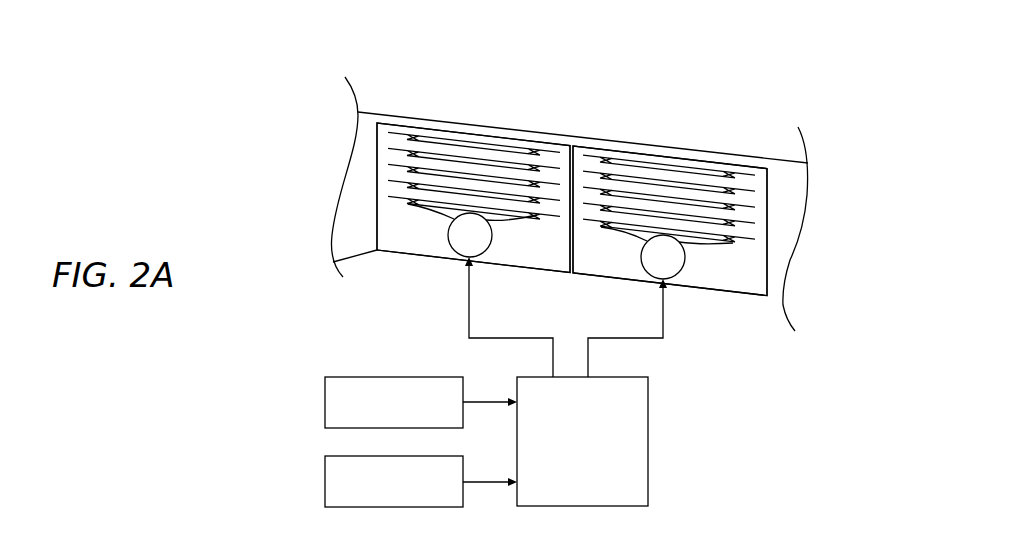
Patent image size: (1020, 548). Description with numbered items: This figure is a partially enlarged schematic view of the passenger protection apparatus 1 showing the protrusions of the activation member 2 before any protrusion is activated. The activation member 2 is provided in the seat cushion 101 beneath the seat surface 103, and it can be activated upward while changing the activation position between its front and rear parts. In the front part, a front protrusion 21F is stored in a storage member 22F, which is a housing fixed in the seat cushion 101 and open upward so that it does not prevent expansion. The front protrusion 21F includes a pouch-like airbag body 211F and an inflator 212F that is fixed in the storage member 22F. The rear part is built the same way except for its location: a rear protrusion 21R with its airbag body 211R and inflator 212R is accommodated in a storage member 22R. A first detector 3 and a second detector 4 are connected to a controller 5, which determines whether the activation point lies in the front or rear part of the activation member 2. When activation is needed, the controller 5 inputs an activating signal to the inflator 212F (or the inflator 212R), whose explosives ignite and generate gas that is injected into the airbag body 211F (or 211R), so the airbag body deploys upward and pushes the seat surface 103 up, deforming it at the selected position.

The passenger protection apparatus 1 is at (731, 393).
The activation member 2 is at (480, 126).
The first detector 3 is at (325, 400).
The second detector 4 is at (325, 478).
The controller 5 is at (648, 420).
The seat cushion 101 is at (388, 109).
The seat surface 103 is at (650, 145).
The front protrusion 21F is at (262, 197).
The airbag body 211F is at (407, 169).
The inflator 212F is at (447, 235).
The storage member 22F is at (410, 254).
The rear protrusion 21R is at (863, 232).
The airbag body 211R is at (757, 197).
The inflator 212R is at (685, 258).
The storage member 22R is at (735, 295).